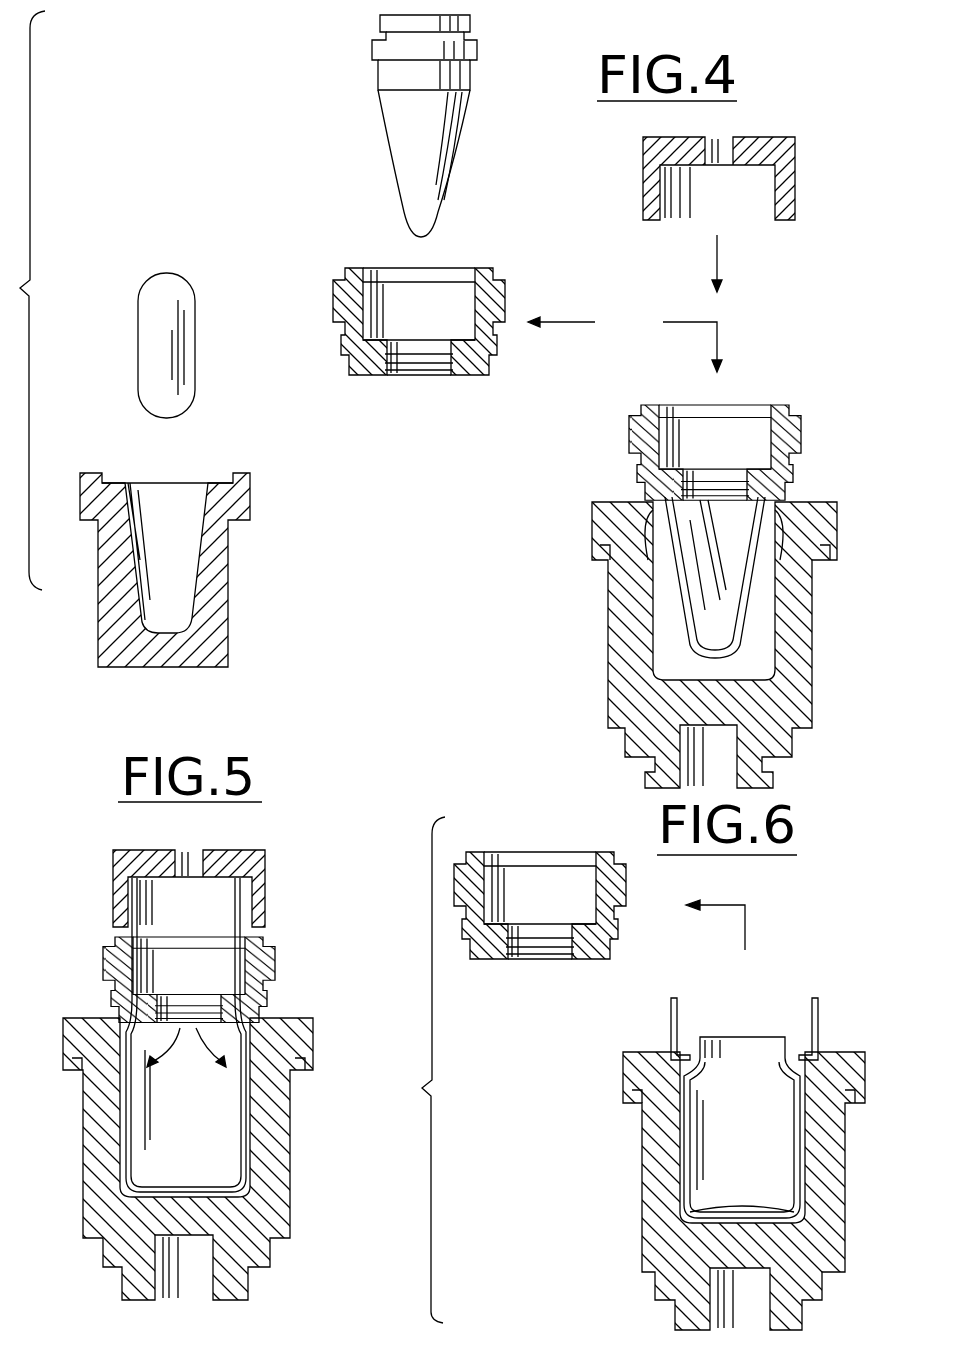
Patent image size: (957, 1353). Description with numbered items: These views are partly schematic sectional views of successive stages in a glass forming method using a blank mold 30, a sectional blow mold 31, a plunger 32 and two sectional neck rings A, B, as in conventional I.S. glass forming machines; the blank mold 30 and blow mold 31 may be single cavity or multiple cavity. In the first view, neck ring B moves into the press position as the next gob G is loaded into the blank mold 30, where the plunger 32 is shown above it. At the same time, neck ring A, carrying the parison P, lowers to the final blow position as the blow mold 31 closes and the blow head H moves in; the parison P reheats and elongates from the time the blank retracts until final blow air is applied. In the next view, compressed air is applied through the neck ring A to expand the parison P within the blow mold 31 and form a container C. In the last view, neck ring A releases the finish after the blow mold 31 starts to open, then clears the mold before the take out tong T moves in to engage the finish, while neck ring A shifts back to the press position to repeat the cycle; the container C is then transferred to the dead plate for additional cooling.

In FIG. 4, the plunger 32 is at (432, 178).
In FIG. 4, the blow head H is at (765, 138).
In FIG. 5, the blow head H is at (268, 885).
In FIG. 4, the neck ring B is at (507, 285).
In FIG. 4, the gob G is at (178, 372).
In FIG. 4, the blank mold 30 is at (232, 568).
In FIG. 4, the neck ring A is at (805, 436).
In FIG. 5, the neck ring A is at (282, 960).
In FIG. 6, the neck ring A is at (625, 905).
In FIG. 4, the blow mold 31 is at (800, 672).
In FIG. 5, the blow mold 31 is at (280, 1188).
In FIG. 6, the blow mold 31 is at (640, 1205).
In FIG. 4, the parison P is at (742, 622).
In FIG. 5, the container C is at (250, 1130).
In FIG. 6, the container C is at (800, 1160).
In FIG. 6, the take out tong T is at (820, 1022).